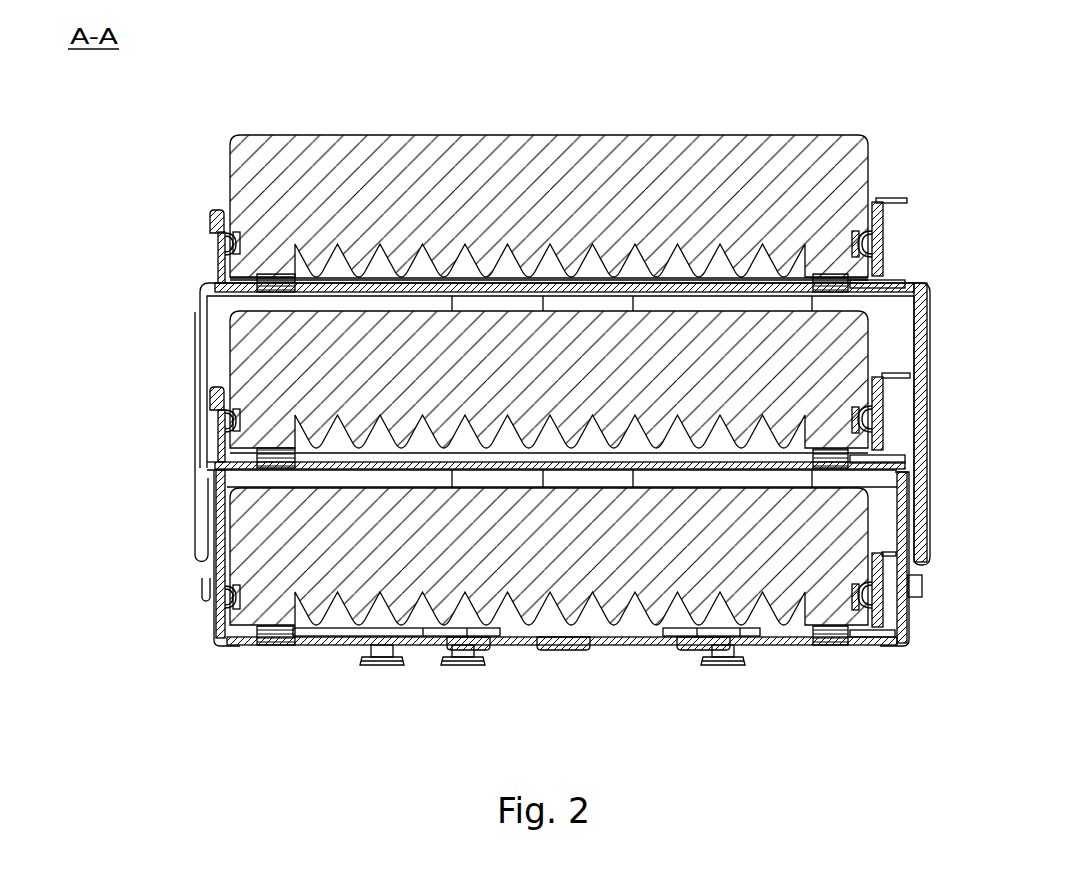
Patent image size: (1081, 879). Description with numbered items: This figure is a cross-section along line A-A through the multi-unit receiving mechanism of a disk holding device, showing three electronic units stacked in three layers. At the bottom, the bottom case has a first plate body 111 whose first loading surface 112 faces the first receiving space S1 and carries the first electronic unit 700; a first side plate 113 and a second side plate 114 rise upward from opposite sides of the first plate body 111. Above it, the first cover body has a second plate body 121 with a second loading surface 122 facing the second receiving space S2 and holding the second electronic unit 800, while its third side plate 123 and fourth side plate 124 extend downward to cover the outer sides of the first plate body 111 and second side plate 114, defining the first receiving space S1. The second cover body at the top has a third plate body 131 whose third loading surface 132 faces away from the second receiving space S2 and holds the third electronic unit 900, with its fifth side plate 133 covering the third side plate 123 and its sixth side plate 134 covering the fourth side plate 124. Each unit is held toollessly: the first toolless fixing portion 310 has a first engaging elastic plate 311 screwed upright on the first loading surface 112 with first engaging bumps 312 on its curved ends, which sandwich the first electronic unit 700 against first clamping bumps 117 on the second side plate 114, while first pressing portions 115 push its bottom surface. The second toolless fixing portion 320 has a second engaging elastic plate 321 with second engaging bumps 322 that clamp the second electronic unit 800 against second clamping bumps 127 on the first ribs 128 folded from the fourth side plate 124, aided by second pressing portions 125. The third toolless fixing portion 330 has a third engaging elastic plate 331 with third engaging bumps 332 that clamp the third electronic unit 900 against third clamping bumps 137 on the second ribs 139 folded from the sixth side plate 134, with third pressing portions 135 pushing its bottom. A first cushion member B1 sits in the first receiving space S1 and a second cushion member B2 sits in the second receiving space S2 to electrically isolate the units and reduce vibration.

The third electronic unit 900 is at (237, 165).
The second electronic unit 800 is at (237, 338).
The first electronic unit 700 is at (237, 505).
The third pressing portion 135 is at (272, 283).
The third clamping bump 137 is at (215, 220).
The second rib 139 is at (228, 242).
The sixth side plate 134 is at (203, 290).
The third plate body 131 is at (878, 282).
The third loading surface 132 is at (683, 283).
The fifth side plate 133 is at (926, 292).
The first cushion member B1 is at (480, 480).
The second cushion member B2 is at (517, 302).
The second loading surface 122 is at (605, 462).
The second plate body 121 is at (905, 465).
The third side plate 123 is at (910, 480).
The fourth side plate 124 is at (201, 540).
The second pressing portion 125 is at (272, 455).
The second clamping bump 127 is at (228, 422).
The first rib 128 is at (222, 447).
The first pressing portion 115 is at (270, 628).
The first clamping bump 117 is at (220, 595).
The second side plate 114 is at (222, 632).
The first side plate 113 is at (906, 644).
The first loading surface 112 is at (592, 648).
The first plate body 111 is at (768, 650).
The third toolless fixing portion 330 is at (937, 241).
The third engaging elastic plate 331 is at (879, 206).
The third engaging bump 332 is at (870, 244).
The second toolless fixing portion 320 is at (937, 417).
The second engaging elastic plate 321 is at (880, 380).
The second engaging bump 322 is at (870, 420).
The first toolless fixing portion 310 is at (937, 598).
The first engaging elastic plate 311 is at (880, 560).
The first engaging bump 312 is at (870, 598).
The first receiving space S1 is at (882, 533).
The second receiving space S2 is at (902, 334).